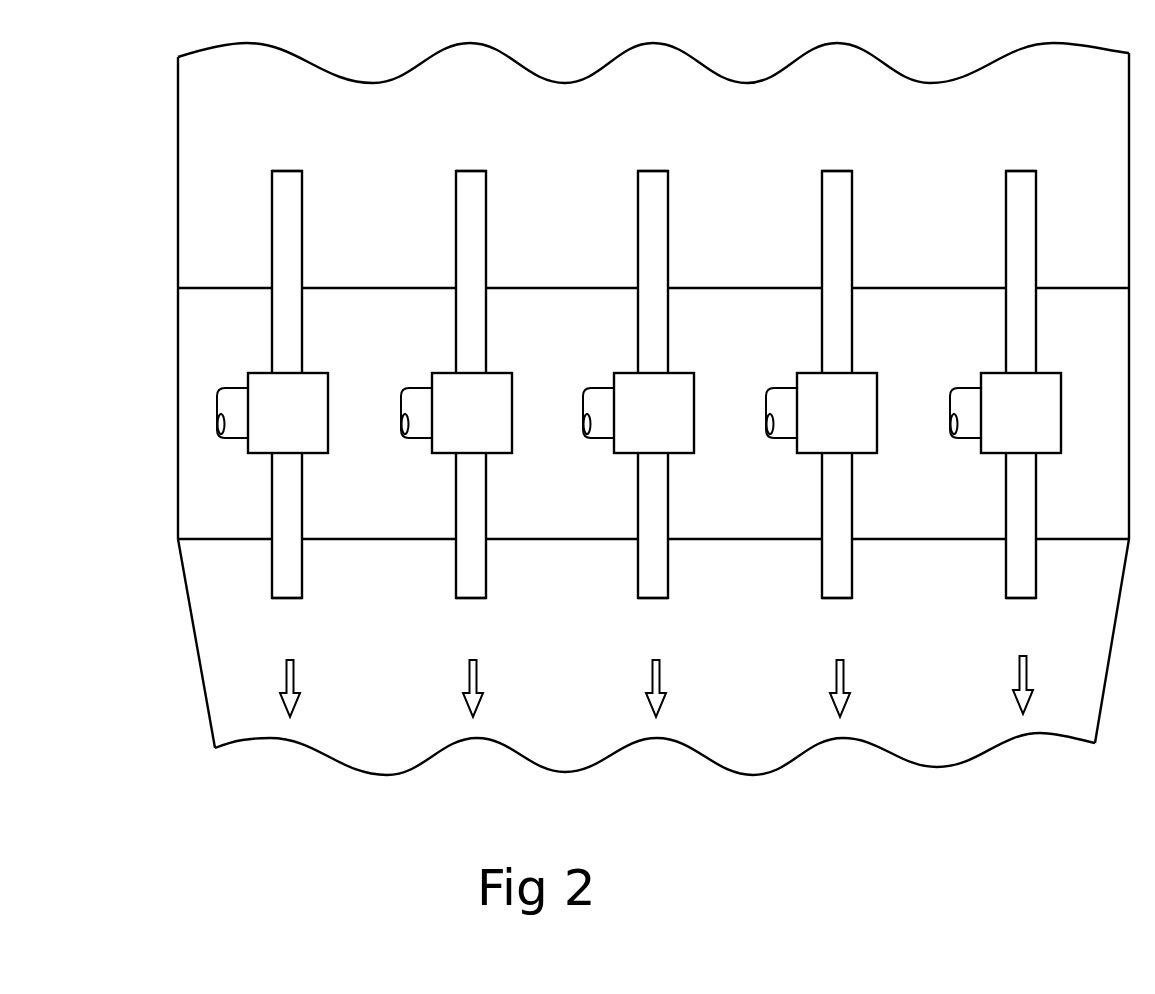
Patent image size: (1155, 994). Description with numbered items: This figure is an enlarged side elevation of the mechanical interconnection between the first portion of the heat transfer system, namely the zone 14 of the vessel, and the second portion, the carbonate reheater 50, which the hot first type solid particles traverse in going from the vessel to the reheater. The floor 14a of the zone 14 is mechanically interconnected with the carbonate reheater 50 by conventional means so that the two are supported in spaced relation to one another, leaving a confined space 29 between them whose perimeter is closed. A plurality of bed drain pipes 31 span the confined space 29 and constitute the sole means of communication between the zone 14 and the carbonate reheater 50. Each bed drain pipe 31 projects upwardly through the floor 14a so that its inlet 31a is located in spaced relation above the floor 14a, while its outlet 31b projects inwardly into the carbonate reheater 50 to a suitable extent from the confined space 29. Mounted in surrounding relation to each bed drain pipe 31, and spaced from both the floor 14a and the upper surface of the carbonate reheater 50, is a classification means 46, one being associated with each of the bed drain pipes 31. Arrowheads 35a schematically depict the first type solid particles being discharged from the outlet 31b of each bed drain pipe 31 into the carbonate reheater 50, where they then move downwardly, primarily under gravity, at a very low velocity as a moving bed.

The zone 14 is at (573, 238).
The floor 14a is at (205, 288).
The space 29 is at (1095, 238).
The bed drain pipe 31 is at (456, 485).
The inlet 31a is at (476, 171).
The outlet 31b is at (475, 598).
The classification means 46 is at (445, 374).
The arrowheads 35a is at (469, 674).
The carbonate reheater 50 is at (578, 701).